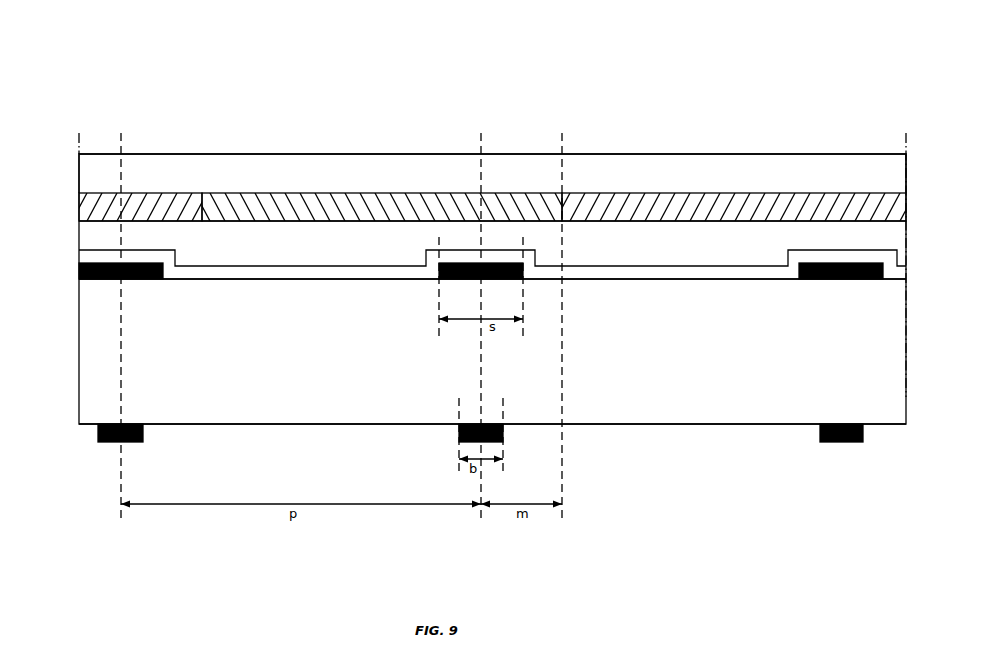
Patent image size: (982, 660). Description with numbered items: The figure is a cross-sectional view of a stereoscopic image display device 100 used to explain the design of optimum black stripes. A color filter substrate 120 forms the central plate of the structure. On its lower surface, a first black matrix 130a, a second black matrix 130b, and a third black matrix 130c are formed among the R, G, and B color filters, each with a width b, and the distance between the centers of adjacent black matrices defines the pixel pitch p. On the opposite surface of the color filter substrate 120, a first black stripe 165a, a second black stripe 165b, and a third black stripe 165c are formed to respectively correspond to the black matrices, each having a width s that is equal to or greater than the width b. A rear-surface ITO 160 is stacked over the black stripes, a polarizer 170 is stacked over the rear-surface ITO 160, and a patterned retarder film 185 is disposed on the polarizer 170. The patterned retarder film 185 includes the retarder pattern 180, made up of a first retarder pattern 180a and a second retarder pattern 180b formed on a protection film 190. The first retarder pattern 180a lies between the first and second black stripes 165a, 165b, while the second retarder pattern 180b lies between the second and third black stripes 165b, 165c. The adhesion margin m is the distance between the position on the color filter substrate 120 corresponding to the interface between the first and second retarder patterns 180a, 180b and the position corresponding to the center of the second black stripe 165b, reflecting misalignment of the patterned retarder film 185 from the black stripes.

The stereoscopic image display device 100 is at (172, 54).
The color filter substrate 120 is at (104, 349).
The first black matrix 130a is at (108, 443).
The second black matrix 130b is at (458, 437).
The third black matrix 130c is at (832, 445).
The rear-surface ITO 160 is at (104, 257).
The first black stripe 165a is at (137, 280).
The second black stripe 165b is at (438, 271).
The third black stripe 165c is at (830, 282).
The polarizer 170 is at (104, 232).
The retarder pattern 180 is at (493, 135).
The first retarder pattern 180a is at (523, 203).
The second retarder pattern 180b is at (610, 207).
The patterned retarder film 185 is at (493, 117).
The protection film 190 is at (440, 168).